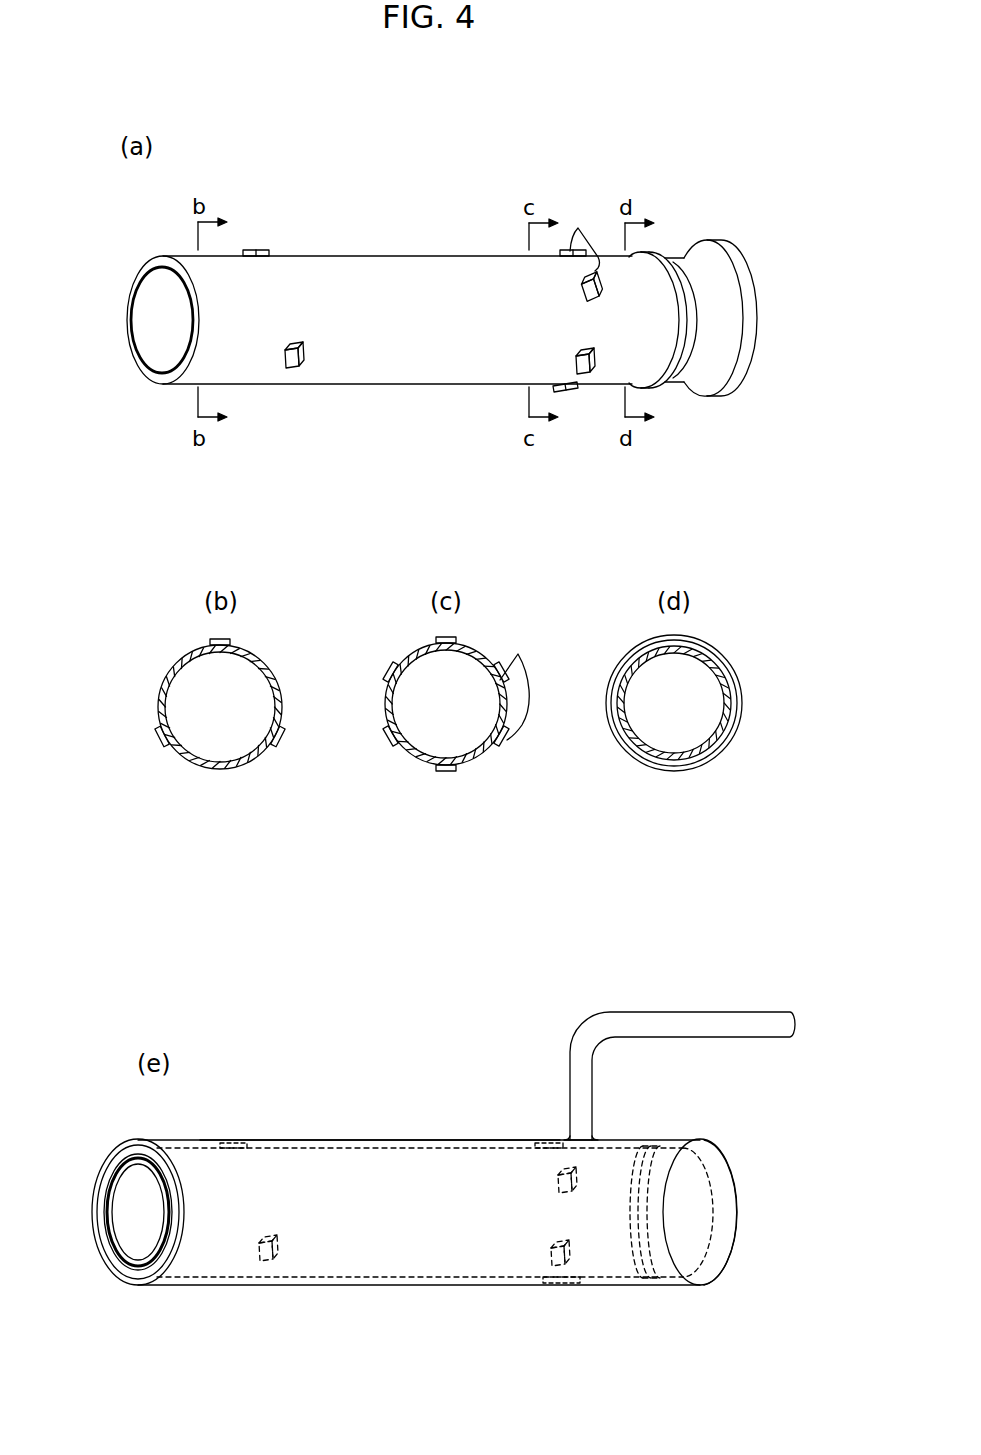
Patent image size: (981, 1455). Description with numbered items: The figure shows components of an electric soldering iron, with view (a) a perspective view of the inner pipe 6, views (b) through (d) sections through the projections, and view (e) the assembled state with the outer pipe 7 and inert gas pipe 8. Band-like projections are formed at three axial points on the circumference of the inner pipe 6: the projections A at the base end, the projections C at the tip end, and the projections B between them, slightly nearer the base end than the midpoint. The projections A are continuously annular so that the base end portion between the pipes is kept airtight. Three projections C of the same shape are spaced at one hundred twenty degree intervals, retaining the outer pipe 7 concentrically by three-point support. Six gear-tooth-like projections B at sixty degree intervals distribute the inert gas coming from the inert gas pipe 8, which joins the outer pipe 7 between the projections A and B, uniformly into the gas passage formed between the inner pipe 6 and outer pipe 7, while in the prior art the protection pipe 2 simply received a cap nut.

The protection pipe 2 is at (292, 1158).
The inner pipe 6 is at (388, 270).
The outer pipe 7 is at (362, 1257).
The inert gas pipe 8 is at (705, 1018).
The projections A is at (654, 252).
The projections B is at (585, 1305).
The projections C is at (255, 250).